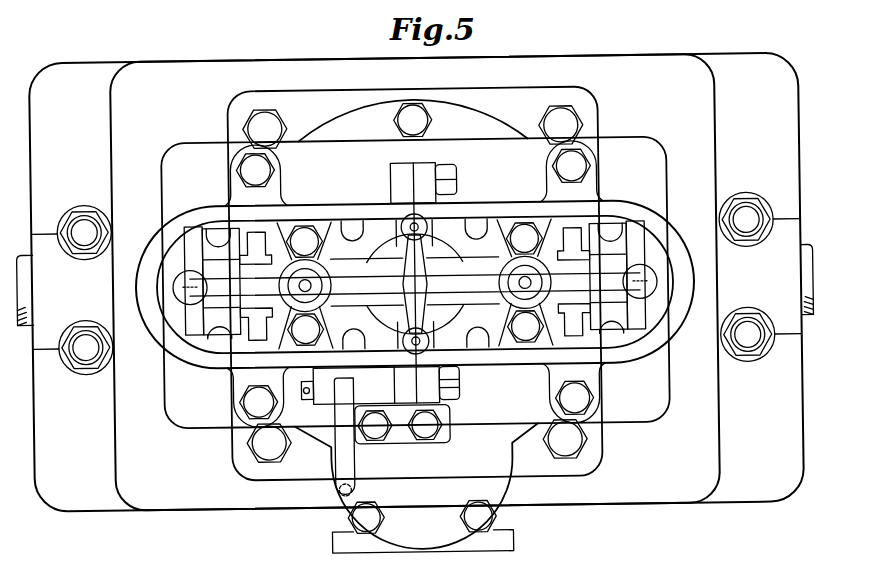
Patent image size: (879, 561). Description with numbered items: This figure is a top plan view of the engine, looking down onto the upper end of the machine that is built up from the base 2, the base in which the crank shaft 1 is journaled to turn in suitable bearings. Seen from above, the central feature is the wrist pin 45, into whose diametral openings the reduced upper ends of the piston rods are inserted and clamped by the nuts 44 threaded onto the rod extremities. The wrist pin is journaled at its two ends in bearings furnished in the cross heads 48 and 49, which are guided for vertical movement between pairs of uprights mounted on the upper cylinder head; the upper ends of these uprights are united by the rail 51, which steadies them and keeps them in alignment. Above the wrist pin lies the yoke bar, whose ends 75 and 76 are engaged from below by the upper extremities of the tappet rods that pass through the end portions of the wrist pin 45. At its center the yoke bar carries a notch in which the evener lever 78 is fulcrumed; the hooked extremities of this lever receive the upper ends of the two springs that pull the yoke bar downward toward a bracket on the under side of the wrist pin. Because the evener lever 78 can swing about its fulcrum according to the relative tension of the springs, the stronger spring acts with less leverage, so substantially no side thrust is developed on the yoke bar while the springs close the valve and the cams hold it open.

The crank shaft 1 is at (24, 285).
The base 2 is at (128, 145).
The nuts 44 is at (252, 270).
The wrist pin 45 is at (350, 266).
The cross head 48 is at (257, 261).
The cross head 49 is at (585, 265).
The rail 51 is at (160, 233).
The end of yoke bar 75 is at (186, 300).
The end of yoke bar 76 is at (643, 267).
The evener lever 78 is at (415, 303).